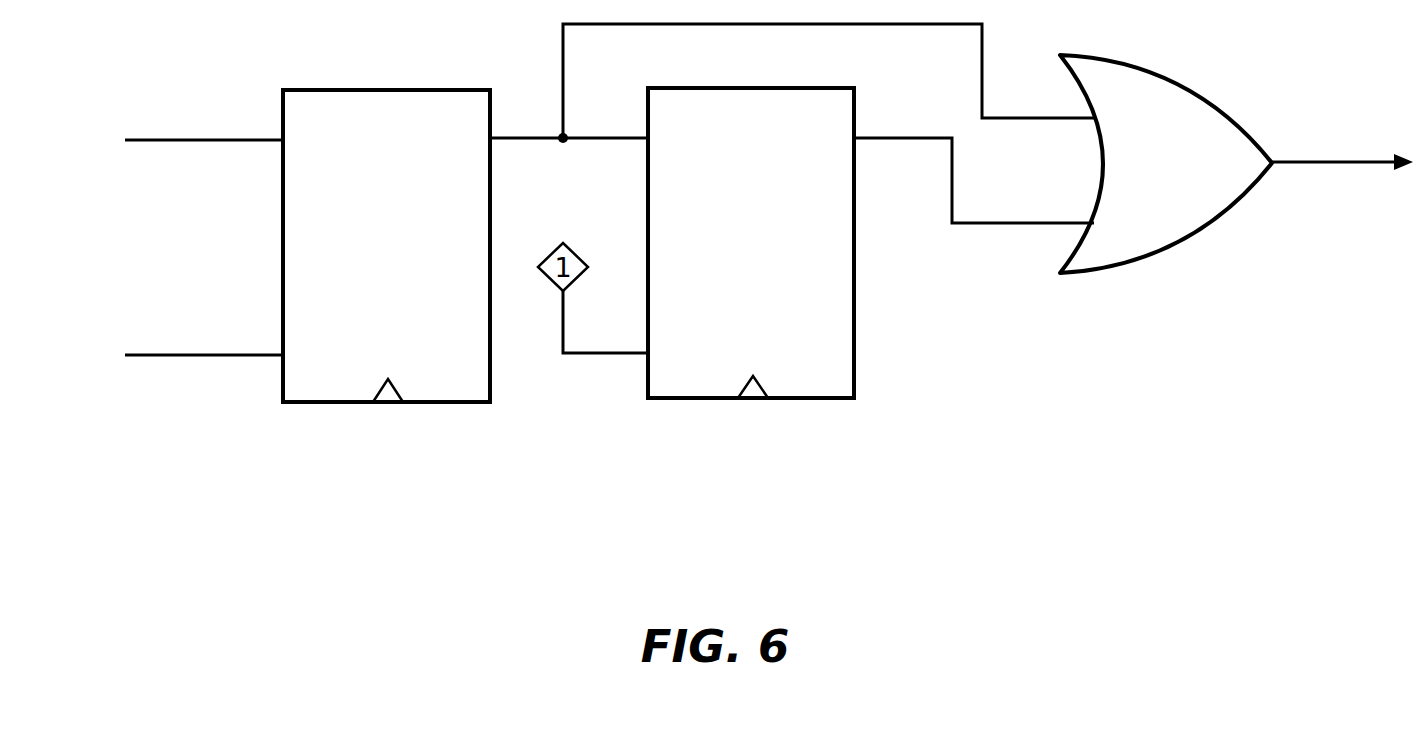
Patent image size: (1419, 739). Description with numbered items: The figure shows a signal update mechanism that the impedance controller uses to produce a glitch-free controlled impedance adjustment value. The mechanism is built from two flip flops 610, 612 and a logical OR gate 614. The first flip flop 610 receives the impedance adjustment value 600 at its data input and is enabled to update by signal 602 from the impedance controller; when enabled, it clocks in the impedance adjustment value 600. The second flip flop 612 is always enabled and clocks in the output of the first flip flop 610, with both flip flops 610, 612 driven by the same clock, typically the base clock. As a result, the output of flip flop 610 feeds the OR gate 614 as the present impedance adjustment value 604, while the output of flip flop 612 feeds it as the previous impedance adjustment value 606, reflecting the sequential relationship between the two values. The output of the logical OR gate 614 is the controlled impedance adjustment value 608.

The impedance adjustment value 600 is at (198, 140).
The enable signal 602 is at (198, 354).
The present impedance adjustment value 604 is at (1042, 119).
The previous impedance adjustment value 606 is at (987, 224).
The controlled impedance adjustment value 608 is at (1345, 160).
The flip flop 610 is at (364, 288).
The flip flop 612 is at (728, 284).
The logical OR gate 614 is at (1153, 173).